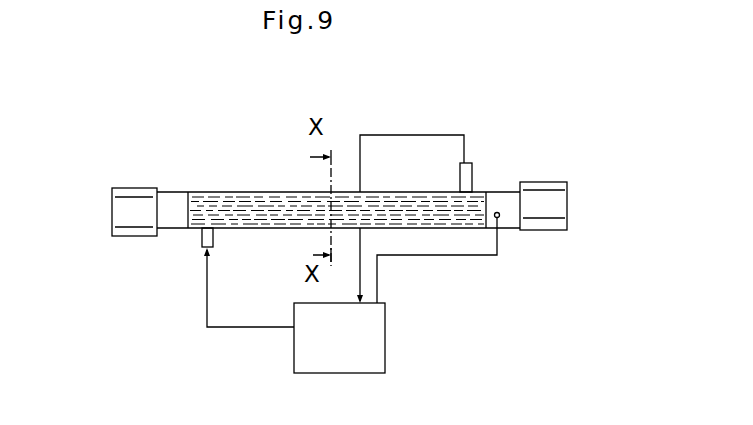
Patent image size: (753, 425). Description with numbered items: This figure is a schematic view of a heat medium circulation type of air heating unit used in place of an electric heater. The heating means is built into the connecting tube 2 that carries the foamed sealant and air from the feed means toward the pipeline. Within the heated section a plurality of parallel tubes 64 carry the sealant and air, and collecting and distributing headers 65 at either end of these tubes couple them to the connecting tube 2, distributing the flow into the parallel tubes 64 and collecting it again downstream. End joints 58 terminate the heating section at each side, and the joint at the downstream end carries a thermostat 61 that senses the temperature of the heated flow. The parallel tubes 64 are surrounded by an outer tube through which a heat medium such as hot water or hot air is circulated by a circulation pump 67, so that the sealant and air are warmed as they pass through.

The connecting tube 2 is at (394, 190).
The end joint 58 is at (128, 188).
The thermostat 61 is at (500, 219).
The parallel tubes 64 is at (264, 205).
The collecting and distributing header 65 is at (171, 224).
The circulation pump 67 is at (323, 350).